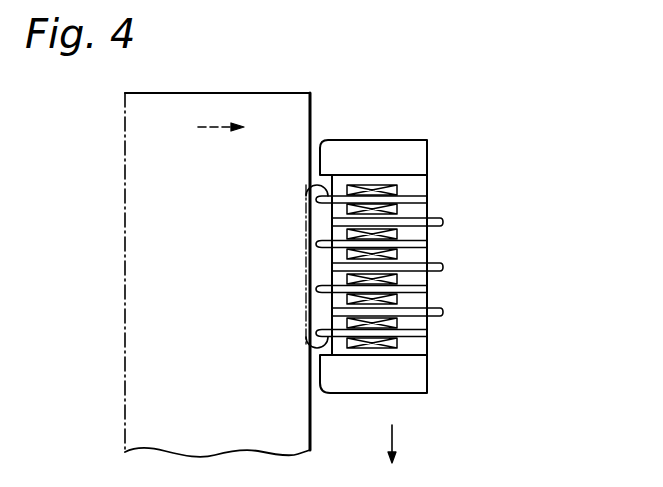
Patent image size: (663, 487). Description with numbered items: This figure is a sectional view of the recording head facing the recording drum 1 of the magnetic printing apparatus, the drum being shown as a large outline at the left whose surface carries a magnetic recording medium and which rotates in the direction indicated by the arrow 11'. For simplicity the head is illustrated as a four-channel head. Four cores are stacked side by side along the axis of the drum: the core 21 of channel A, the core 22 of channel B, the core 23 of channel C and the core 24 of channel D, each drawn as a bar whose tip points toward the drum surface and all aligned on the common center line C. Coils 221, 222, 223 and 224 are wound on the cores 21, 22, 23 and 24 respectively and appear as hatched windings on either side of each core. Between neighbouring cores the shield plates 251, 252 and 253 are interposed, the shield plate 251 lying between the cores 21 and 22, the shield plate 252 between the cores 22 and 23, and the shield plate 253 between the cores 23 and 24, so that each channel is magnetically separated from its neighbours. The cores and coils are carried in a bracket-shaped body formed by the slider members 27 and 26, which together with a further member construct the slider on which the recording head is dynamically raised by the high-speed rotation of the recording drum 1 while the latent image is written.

The recording drum 1 is at (259, 93).
The rotation direction arrow 11' is at (221, 115).
The center line C is at (306, 204).
The slider member 27 is at (388, 140).
The slider member 26 is at (352, 394).
The core of channel A 21 is at (318, 199).
The core of channel B 22 is at (318, 244).
The core of channel C 23 is at (318, 289).
The core of channel D 24 is at (318, 333).
The shield plate 251 is at (443, 222).
The shield plate 252 is at (443, 267).
The shield plate 253 is at (443, 312).
The coil 221 is at (397, 187).
The coil 222 is at (400, 231).
The coil 223 is at (400, 278).
The coil 224 is at (400, 322).